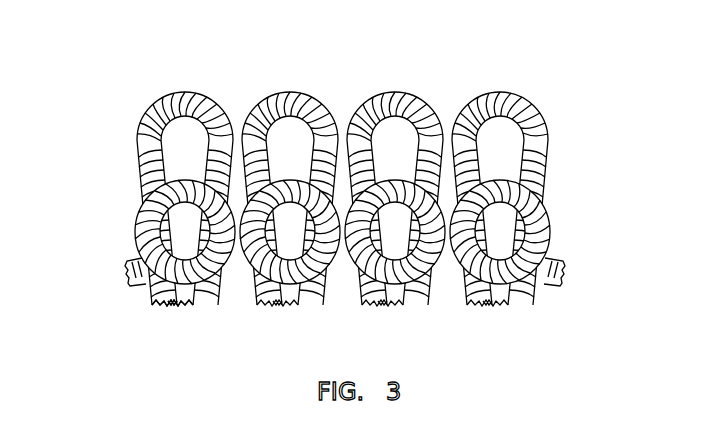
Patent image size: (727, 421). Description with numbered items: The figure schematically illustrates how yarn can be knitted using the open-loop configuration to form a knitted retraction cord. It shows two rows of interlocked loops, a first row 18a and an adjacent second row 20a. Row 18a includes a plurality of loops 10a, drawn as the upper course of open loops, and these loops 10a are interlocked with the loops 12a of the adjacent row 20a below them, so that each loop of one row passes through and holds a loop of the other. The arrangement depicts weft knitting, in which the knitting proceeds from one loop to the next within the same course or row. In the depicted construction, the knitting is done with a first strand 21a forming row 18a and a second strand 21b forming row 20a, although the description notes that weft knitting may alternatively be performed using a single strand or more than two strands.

The loops 10a is at (253, 102).
The loops 12a is at (155, 175).
The row 18a is at (125, 149).
The row 20a is at (125, 243).
The first strand 21a is at (240, 290).
The second strand 21b is at (167, 308).